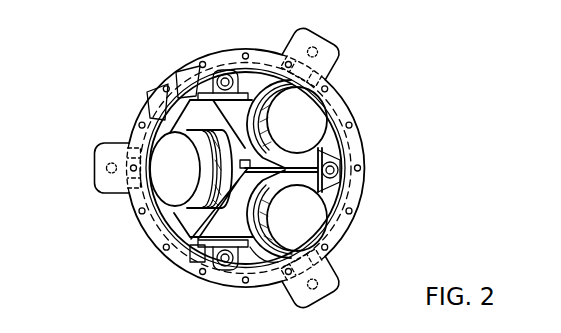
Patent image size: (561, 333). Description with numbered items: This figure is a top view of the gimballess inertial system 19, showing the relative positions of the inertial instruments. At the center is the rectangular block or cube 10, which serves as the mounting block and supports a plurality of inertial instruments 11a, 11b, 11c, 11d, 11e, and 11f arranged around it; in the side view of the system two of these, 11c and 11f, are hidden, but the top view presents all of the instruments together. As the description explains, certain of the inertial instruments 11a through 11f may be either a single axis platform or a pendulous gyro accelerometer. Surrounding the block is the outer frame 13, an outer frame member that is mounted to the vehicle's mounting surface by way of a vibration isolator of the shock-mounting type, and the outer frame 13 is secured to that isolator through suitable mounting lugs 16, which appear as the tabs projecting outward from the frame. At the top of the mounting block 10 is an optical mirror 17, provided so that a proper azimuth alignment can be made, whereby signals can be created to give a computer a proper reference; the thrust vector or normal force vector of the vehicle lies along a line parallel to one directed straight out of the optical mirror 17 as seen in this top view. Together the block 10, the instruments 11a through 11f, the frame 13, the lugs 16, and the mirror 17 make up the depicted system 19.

The mounting block 10 is at (235, 97).
The inertial instrument 11a is at (266, 260).
The inertial instrument 11b is at (143, 215).
The inertial instrument 11c is at (333, 110).
The inertial instrument 11d is at (335, 200).
The inertial instrument 11e is at (190, 263).
The inertial instrument 11f is at (176, 80).
The outer frame 13 is at (363, 157).
The mounting lugs 16 is at (97, 178).
The optical mirror 17 is at (190, 245).
The gimballess inertial system 19 is at (52, 107).